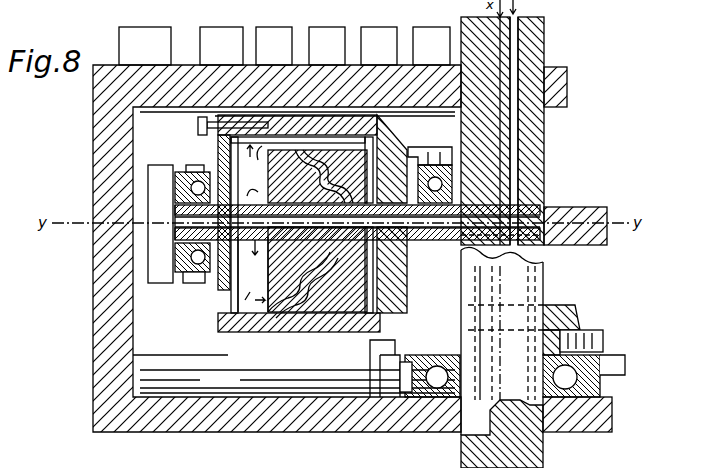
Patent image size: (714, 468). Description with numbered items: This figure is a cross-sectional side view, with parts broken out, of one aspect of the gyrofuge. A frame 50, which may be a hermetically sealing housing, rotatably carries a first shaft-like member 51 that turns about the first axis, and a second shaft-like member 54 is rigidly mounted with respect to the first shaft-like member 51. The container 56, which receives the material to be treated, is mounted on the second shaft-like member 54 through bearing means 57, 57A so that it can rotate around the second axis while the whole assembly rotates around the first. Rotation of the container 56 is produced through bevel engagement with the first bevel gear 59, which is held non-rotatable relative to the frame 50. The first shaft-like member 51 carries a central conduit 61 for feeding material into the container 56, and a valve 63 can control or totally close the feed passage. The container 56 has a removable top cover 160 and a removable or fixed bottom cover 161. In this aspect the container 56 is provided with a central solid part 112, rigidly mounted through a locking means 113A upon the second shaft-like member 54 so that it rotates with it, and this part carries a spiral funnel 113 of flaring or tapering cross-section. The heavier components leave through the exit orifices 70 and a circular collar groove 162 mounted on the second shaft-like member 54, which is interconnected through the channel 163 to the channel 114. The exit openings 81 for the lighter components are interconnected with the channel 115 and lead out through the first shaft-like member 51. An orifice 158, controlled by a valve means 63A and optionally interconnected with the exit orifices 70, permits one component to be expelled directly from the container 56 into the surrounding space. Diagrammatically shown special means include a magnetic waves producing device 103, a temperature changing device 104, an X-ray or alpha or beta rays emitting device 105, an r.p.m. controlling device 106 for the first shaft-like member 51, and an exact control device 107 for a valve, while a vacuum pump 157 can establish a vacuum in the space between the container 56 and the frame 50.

The frame 50 is at (108, 333).
The first shaft-like member 51 is at (533, 145).
The second shaft-like member 54 is at (187, 233).
The container 56 is at (298, 313).
The bearing means 57 is at (431, 162).
The bearing means 57A is at (140, 160).
The first bevel gear 59 is at (571, 322).
The central conduit 61 is at (518, 47).
The valve 63 is at (255, 224).
The valve means 63A is at (197, 126).
The exit orifices 70 is at (196, 146).
The exit openings 81 is at (372, 355).
The magnetic waves producing device 103 is at (221, 46).
The temperature changing device 104 is at (274, 46).
The X-ray or alpha or beta rays emitting device 105 is at (327, 46).
The r.p.m. controlling device 106 is at (379, 46).
The exact control device 107 is at (431, 46).
The central solid part 112 is at (322, 345).
The spiral funnel 113 is at (245, 327).
The locking means 113A is at (205, 322).
The channel 114 is at (470, 225).
The channel 115 is at (533, 277).
The vacuum pump 157 is at (145, 46).
The orifice 158 is at (254, 112).
The top cover 160 is at (378, 124).
The bottom cover 161 is at (218, 327).
The circular collar groove 162 is at (176, 211).
The channel 163 is at (178, 283).